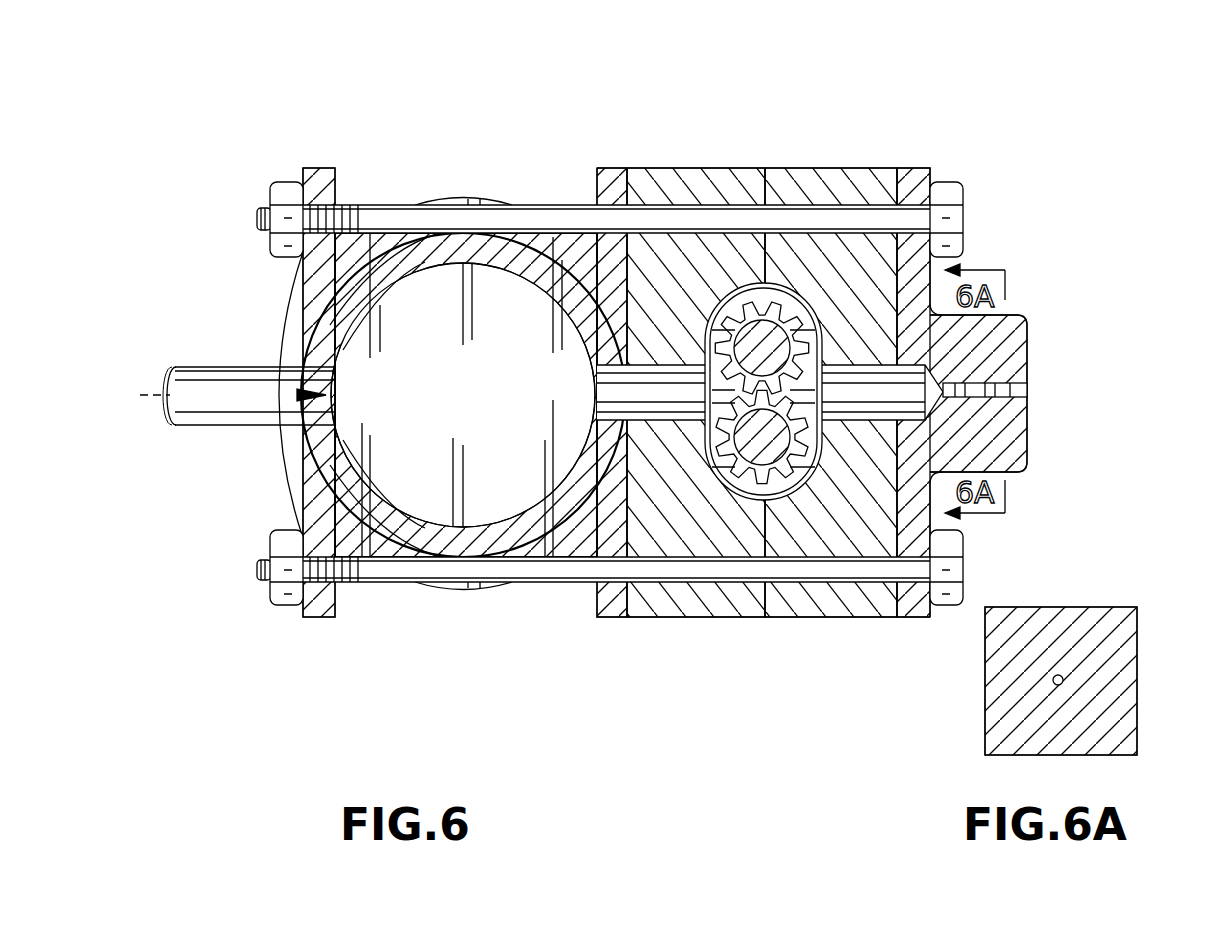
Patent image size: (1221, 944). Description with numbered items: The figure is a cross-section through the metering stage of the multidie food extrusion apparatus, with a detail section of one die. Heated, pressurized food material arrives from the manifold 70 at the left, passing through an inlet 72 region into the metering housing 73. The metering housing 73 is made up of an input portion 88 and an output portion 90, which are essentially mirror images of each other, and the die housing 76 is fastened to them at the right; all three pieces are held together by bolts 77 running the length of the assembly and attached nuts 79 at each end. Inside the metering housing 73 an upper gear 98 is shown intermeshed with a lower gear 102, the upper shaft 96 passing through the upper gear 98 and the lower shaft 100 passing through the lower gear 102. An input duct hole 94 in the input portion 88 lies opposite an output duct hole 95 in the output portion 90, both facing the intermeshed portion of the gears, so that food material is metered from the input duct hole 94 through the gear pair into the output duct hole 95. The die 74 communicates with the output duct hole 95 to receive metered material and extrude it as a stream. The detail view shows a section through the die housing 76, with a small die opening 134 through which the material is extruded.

In FIG. 6, the manifold 70 is at (540, 172).
In FIG. 6, the inlet pipe 72 is at (232, 383).
In FIG. 6, the metering housing 73 is at (769, 392).
In FIG. 6, the die 74 is at (1012, 392).
In FIG. 6, the die housing 76 is at (1005, 325).
In FIG. 6A, the die housing 76 is at (1062, 628).
In FIG. 6, the bolts 77 is at (445, 220).
In FIG. 6, the nuts 79 is at (283, 190).
In FIG. 6, the input portion 88 is at (706, 617).
In FIG. 6, the output portion 90 is at (862, 617).
In FIG. 6, the input duct hole 94 is at (688, 372).
In FIG. 6, the output duct hole 95 is at (865, 378).
In FIG. 6, the upper shaft 96 is at (762, 345).
In FIG. 6, the upper gear 98 is at (792, 315).
In FIG. 6, the lower shaft 100 is at (770, 450).
In FIG. 6, the lower gear 102 is at (800, 468).
In FIG. 6A, the orifice 134 is at (1063, 680).